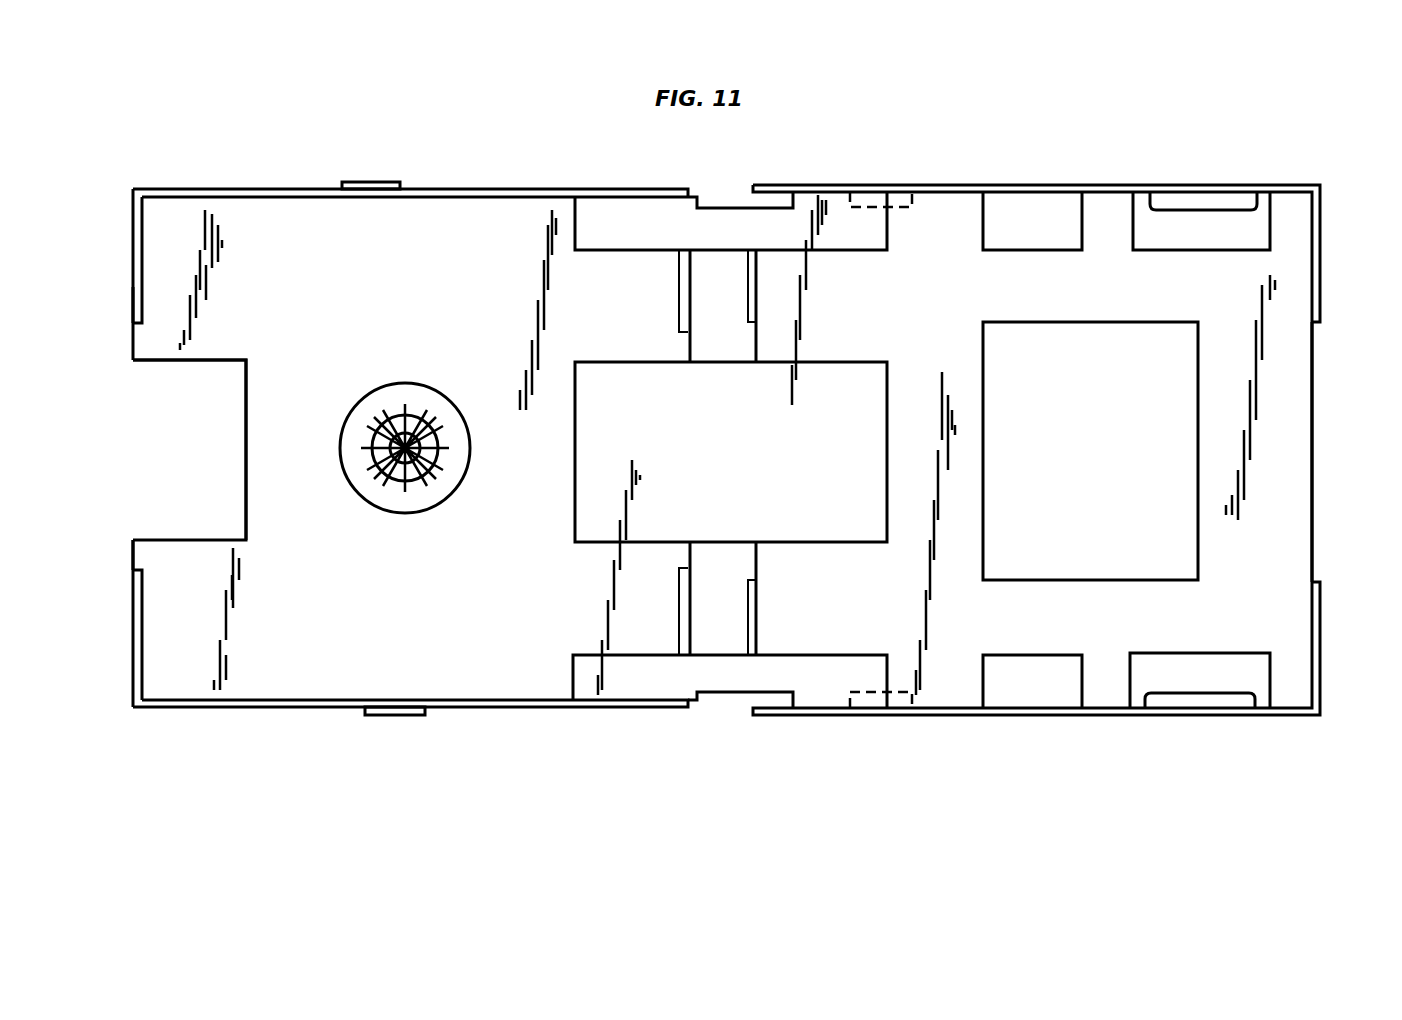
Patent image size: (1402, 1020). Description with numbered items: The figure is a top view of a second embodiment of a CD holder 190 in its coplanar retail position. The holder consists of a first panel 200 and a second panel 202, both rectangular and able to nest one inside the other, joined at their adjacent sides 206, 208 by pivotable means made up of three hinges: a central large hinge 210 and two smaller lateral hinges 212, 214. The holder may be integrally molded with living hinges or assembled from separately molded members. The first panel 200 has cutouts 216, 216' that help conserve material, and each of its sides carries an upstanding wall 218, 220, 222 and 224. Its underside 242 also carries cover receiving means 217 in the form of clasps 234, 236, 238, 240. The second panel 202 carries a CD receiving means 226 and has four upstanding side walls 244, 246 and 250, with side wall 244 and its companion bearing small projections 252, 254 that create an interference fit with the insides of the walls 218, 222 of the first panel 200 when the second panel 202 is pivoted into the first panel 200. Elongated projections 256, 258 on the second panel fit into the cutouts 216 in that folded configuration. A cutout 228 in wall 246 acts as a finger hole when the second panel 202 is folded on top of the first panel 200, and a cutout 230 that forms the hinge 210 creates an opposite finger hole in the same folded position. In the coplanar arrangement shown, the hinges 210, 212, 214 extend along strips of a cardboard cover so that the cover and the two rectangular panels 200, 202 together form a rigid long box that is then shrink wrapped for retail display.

The CD holder 190 is at (908, 845).
The first panel 200 is at (930, 212).
The second panel 202 is at (362, 213).
The adjacent side of first panel 206 is at (679, 285).
The adjacent side of second panel 208 is at (750, 290).
The central large hinge 210 is at (880, 402).
The lateral smaller hinge 212 is at (818, 662).
The lateral smaller hinge 214 is at (862, 250).
The cutouts 216 is at (1126, 450).
The block 216' is at (1040, 450).
The cover receiving means 217 is at (1262, 168).
The upstanding wall 218 is at (1165, 185).
The upstanding wall 220 is at (758, 610).
The upstanding wall 222 is at (1012, 716).
The upstanding wall 224 is at (1322, 312).
The CD receiving means 226 is at (388, 488).
The cutout 228 is at (196, 360).
The cutout 230 is at (582, 545).
The clasp 234 is at (1223, 700).
The clasp 236 is at (1203, 192).
The clasp 238 is at (880, 192).
The clasp 240 is at (900, 700).
The underside of first panel 242 is at (230, 707).
The side wall 244 is at (455, 189).
The side wall 246 is at (133, 287).
The side wall 250 is at (678, 622).
The small projection 252 is at (393, 715).
The small projection 254 is at (348, 182).
The elongated projection 256 is at (752, 690).
The elongated projection 258 is at (728, 209).